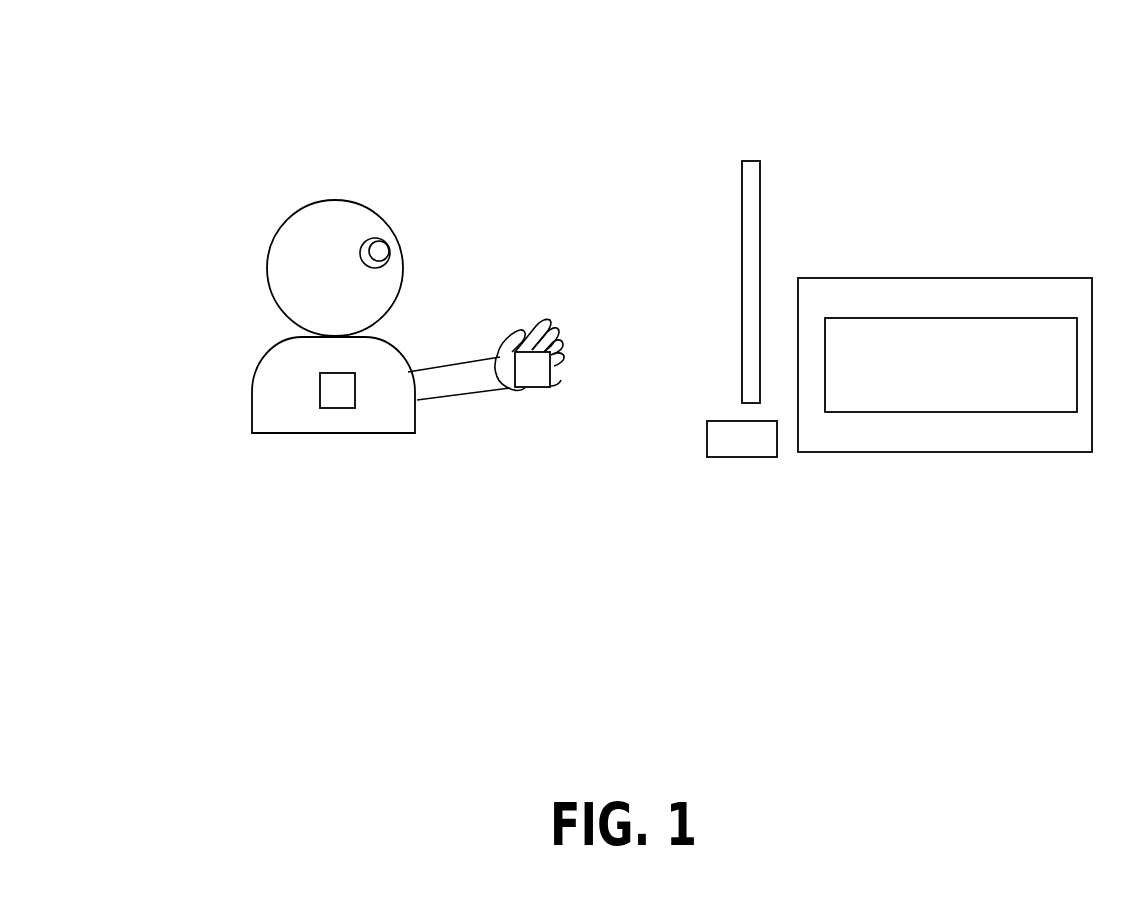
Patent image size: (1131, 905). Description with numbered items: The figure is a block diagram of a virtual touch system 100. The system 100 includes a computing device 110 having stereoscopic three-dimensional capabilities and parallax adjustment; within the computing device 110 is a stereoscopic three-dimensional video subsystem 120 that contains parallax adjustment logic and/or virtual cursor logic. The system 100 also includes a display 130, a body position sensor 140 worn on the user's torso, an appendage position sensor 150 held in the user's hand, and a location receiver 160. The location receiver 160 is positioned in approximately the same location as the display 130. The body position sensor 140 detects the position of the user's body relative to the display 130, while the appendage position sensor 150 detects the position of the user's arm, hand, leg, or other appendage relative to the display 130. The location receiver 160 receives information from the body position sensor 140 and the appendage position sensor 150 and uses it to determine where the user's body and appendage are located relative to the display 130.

The virtual touch system 100 is at (664, 90).
The computing device 110 is at (945, 278).
The stereoscopic 3D video subsystem 120 is at (969, 402).
The display 130 is at (750, 161).
The body position sensor 140 is at (320, 390).
The appendage position sensor 150 is at (550, 367).
The location receiver 160 is at (777, 440).